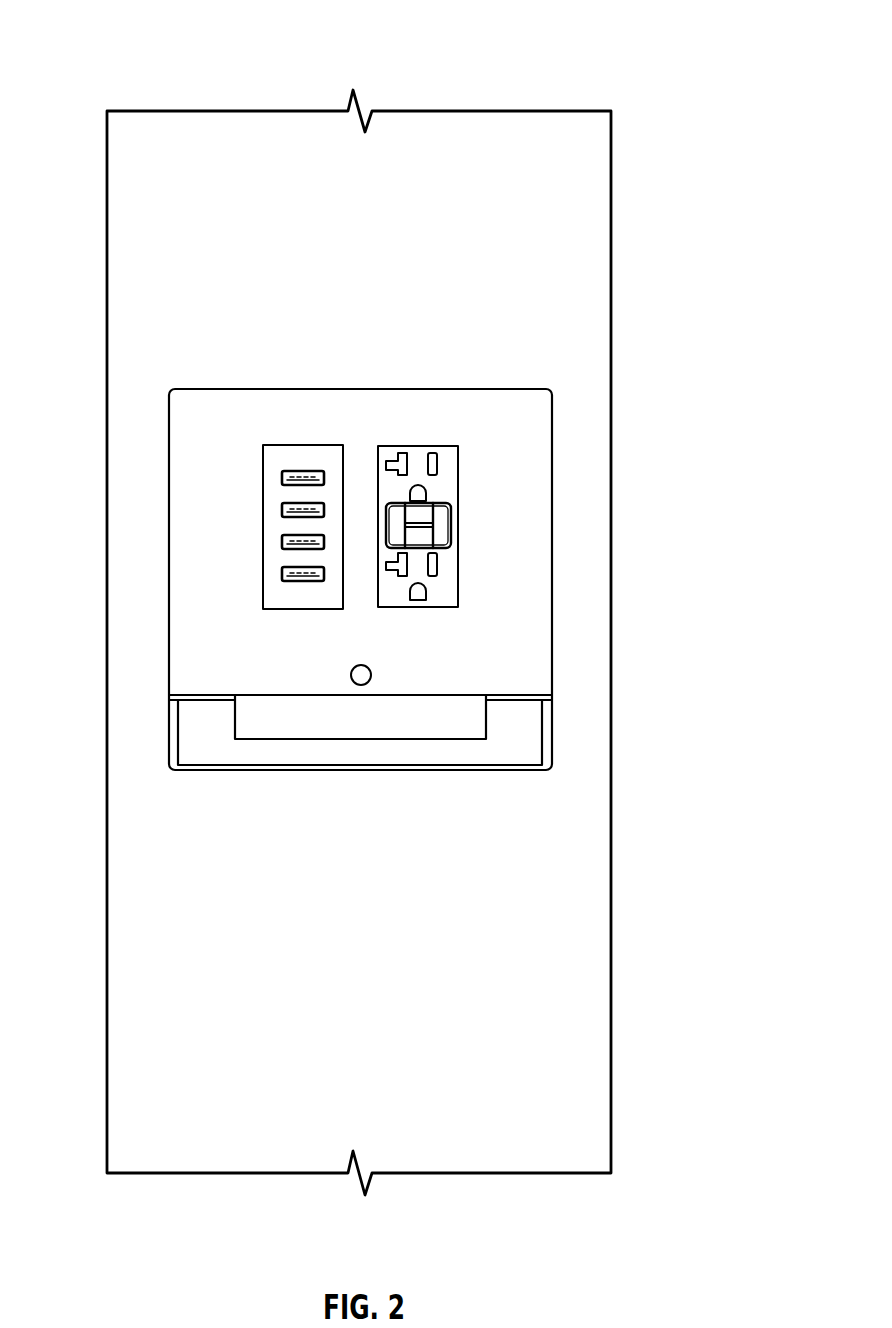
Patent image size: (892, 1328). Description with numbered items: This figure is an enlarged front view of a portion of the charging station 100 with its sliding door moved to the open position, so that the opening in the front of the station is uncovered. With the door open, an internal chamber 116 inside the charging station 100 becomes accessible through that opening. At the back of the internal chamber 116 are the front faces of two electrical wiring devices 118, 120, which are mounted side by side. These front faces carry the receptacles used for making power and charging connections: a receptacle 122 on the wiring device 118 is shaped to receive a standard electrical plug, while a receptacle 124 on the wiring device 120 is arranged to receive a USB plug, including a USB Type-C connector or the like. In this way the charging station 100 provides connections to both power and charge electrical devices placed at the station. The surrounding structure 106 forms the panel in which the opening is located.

The charging station 100 is at (671, 38).
The wall panel 106 is at (592, 928).
The internal chamber 116 is at (502, 580).
The electrical wiring device 118 is at (442, 558).
The electrical wiring device 120 is at (278, 579).
The receptacle 122 is at (437, 463).
The receptacle 124 is at (283, 513).